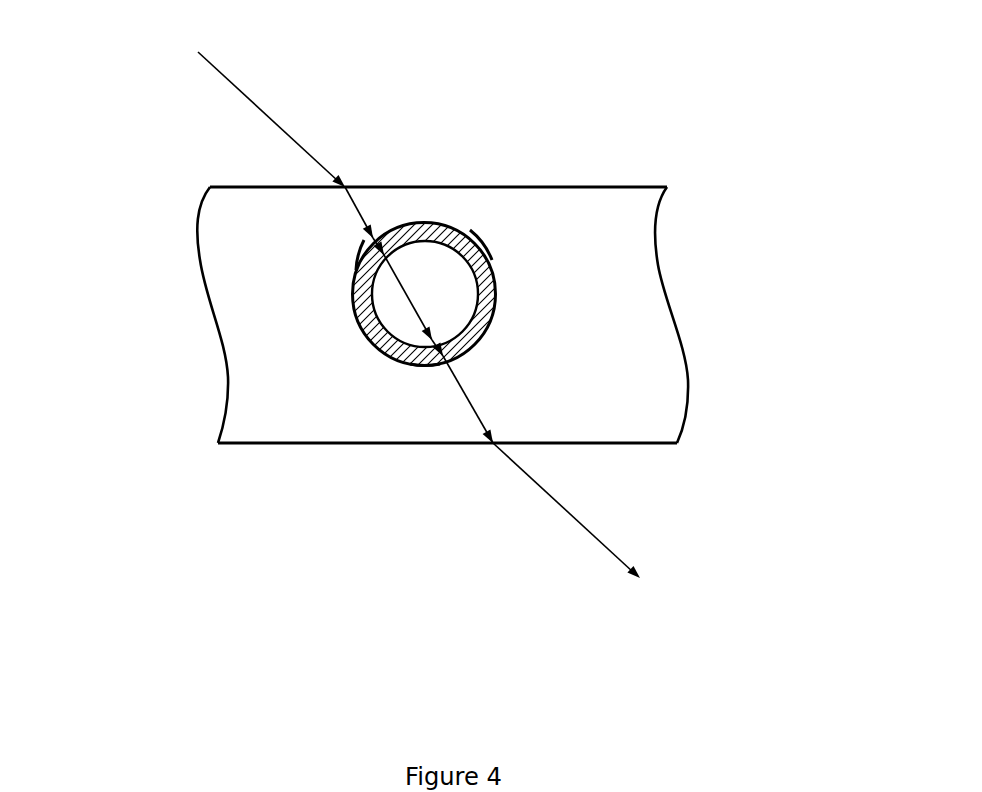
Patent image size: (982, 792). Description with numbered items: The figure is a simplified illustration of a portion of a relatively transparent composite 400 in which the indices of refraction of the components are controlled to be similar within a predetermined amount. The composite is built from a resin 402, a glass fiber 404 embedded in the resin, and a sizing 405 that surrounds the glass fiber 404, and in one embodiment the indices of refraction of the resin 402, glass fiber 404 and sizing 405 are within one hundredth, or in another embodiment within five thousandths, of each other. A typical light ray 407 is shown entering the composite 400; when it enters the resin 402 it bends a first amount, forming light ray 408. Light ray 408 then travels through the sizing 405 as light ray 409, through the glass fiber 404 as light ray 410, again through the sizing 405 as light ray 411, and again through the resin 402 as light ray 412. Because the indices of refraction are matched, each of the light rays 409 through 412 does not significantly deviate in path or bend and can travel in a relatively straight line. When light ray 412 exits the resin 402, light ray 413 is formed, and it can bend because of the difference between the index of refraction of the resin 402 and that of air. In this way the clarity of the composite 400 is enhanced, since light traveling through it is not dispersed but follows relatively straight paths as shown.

The relatively transparent composite 400 is at (216, 586).
The resin 402 is at (667, 187).
The glass fiber 404 is at (449, 240).
The sizing 405 is at (488, 257).
The light ray 407 is at (234, 85).
The light ray 408 is at (361, 215).
The light ray 409 is at (357, 261).
The light ray 410 is at (400, 290).
The light ray 411 is at (430, 363).
The light ray 412 is at (478, 417).
The light ray 413 is at (550, 497).